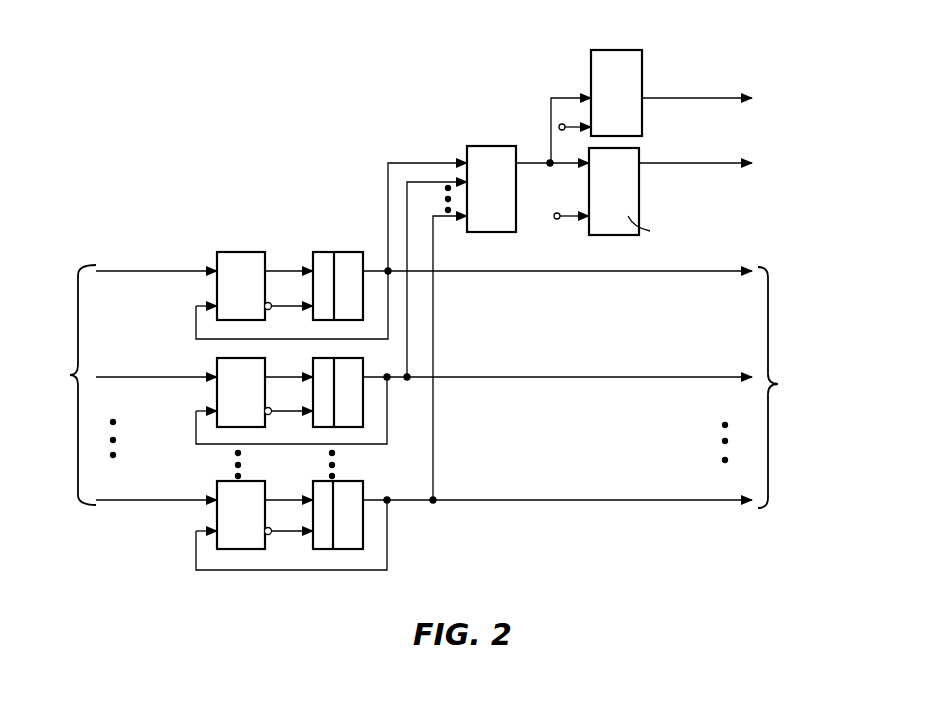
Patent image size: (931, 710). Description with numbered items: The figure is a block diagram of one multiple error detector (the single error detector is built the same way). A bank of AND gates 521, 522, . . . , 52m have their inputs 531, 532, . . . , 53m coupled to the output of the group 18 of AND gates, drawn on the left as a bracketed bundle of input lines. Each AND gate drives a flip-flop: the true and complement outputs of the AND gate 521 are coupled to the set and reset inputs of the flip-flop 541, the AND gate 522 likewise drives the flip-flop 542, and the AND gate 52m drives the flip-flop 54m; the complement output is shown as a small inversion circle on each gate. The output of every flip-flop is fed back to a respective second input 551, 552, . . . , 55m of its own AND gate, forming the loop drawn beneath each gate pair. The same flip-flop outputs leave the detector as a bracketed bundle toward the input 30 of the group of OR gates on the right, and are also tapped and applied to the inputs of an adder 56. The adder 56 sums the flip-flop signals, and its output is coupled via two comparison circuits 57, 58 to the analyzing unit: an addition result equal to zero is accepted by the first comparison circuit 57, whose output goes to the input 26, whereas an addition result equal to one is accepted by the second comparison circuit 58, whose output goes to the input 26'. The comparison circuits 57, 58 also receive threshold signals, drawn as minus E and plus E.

The group of AND gates 18 is at (61, 385).
The input of the group of OR gates 30 is at (794, 387).
The input of AND gate 531 is at (217, 262).
The input of AND gate 551 is at (217, 300).
The AND gate 521 is at (270, 310).
The flip-flop 541 is at (342, 252).
The input of AND gate 532 is at (217, 370).
The input of AND gate 552 is at (217, 405).
The AND gate 522 is at (270, 415).
The flip-flop 542 is at (363, 366).
The input of AND gate 53m is at (217, 492).
The input of AND gate 55m is at (217, 525).
The AND gate 52m is at (270, 535).
The flip-flop 54m is at (363, 488).
The adder 56 is at (453, 323).
The first comparison circuit 57 is at (606, 87).
The second comparison circuit 58 is at (647, 200).
The input of the analyzing unit 26 is at (722, 99).
The input of the analyzing unit 26' is at (725, 159).